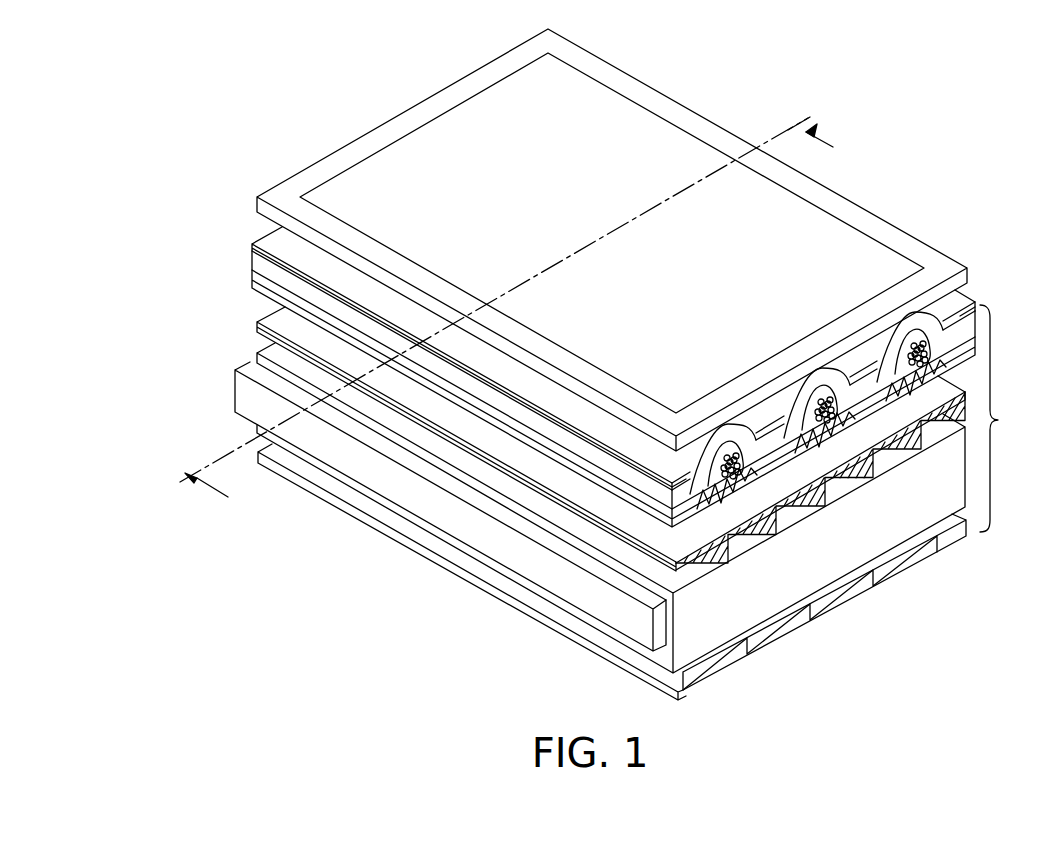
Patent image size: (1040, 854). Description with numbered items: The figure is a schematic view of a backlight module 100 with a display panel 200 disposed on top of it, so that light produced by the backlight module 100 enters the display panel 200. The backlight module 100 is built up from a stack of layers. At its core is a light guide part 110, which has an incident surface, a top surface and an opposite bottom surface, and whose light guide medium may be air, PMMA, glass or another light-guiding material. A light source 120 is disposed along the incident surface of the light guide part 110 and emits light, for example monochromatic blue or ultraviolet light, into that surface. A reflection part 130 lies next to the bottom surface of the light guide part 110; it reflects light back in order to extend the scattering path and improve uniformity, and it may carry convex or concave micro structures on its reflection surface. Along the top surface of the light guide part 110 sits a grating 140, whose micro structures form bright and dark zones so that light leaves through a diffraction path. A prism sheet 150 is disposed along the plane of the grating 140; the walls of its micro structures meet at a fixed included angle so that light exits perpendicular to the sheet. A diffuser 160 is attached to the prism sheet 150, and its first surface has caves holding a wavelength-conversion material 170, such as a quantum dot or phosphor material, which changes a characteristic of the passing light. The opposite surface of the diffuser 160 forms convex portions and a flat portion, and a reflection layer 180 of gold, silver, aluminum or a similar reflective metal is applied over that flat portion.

The backlight module 100 is at (1008, 418).
The light guide part 110 is at (918, 491).
The light source 120 is at (232, 393).
The reflection part 130 is at (708, 684).
The grating 140 is at (254, 322).
The prism sheet 150 is at (249, 278).
The diffuser 160 is at (249, 262).
The wavelength-conversion material 170 is at (931, 334).
The reflection layer 180 is at (249, 245).
The display panel 200 is at (440, 86).